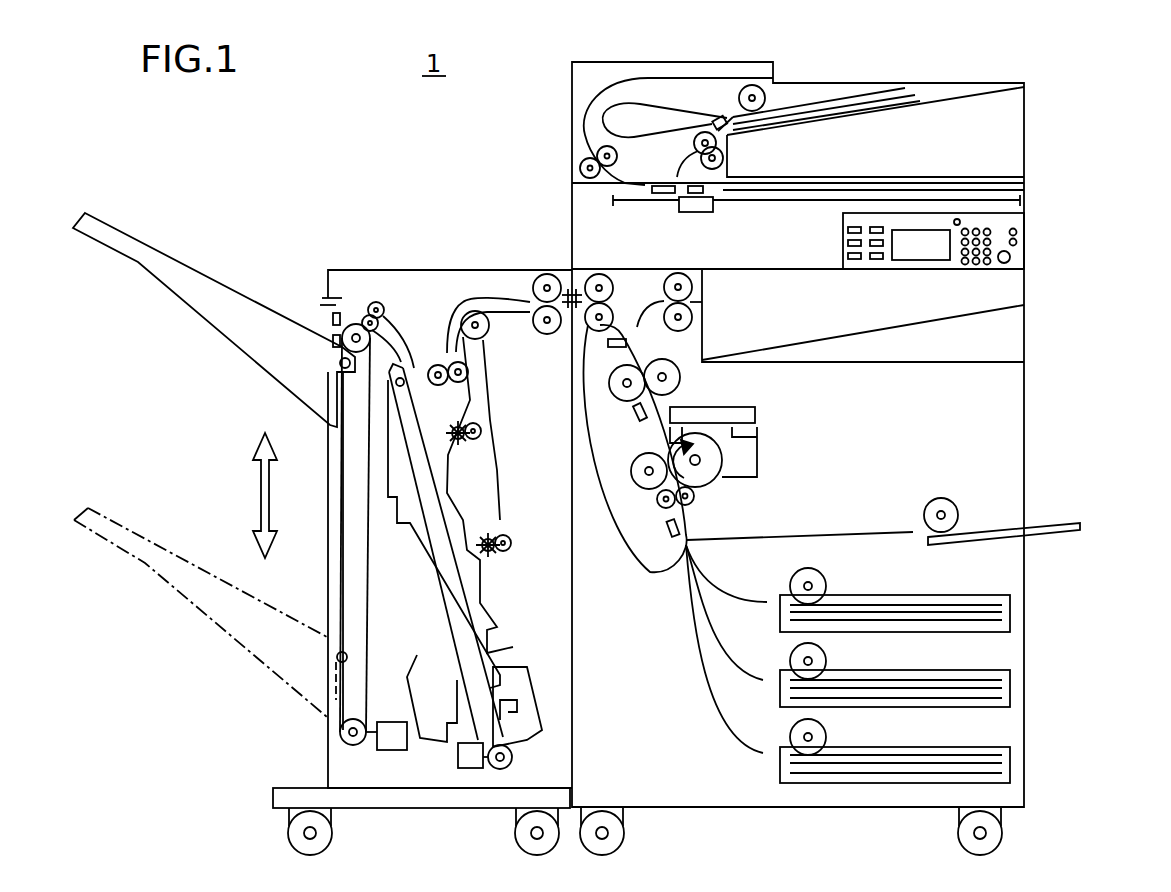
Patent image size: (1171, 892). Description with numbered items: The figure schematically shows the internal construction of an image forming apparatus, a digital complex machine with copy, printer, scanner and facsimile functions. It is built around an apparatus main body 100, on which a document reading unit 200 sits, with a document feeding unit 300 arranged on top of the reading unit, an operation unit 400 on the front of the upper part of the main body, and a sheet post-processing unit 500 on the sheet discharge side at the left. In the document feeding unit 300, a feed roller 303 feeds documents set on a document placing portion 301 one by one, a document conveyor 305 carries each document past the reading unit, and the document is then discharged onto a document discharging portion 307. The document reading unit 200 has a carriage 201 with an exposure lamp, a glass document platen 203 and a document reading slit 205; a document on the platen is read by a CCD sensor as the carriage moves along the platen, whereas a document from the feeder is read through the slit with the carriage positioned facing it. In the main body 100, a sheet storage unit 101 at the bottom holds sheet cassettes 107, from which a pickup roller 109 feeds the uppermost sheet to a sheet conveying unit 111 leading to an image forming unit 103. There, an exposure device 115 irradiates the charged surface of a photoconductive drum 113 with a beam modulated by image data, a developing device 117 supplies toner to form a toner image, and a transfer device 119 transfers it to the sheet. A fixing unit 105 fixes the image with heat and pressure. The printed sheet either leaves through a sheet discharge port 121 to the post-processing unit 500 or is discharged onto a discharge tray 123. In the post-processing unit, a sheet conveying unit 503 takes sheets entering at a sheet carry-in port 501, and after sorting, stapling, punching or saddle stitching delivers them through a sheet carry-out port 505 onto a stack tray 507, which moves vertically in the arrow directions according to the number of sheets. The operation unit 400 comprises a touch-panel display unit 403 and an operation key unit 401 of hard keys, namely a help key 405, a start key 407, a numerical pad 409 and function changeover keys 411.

The apparatus main body 100 is at (1000, 418).
The sheet storage unit 101 is at (1032, 591).
The image forming unit 103 is at (696, 395).
The fixing unit 105 is at (626, 393).
The sheet cassette 107 is at (1008, 612).
The pickup roller 109 is at (826, 586).
The sheet conveying unit 111 is at (683, 514).
The photoconductive drum 113 is at (703, 479).
The exposure device 115 is at (757, 413).
The developing device 117 is at (757, 448).
The transfer device 119 is at (647, 482).
The sheet discharge port 121 is at (582, 296).
The discharge tray 123 is at (885, 325).
The document reading unit 200 is at (634, 210).
The carriage 201 is at (704, 212).
The document platen 203 is at (1000, 193).
The document reading slit 205 is at (643, 184).
The document feeding unit 300 is at (846, 86).
The document placing portion 301 is at (948, 92).
The feed roller 303 is at (766, 95).
The document conveyor 305 is at (635, 130).
The document discharging portion 307 is at (832, 176).
The operation unit 400 is at (1030, 244).
The operation key unit 401 is at (1026, 260).
The display unit 403 is at (922, 243).
The help key 405 is at (960, 221).
The start key 407 is at (1003, 264).
The numerical pad 409 is at (968, 262).
The function changeover keys 411 is at (845, 240).
The sheet post-processing unit 500 is at (398, 266).
The sheet carry-in port 501 is at (547, 274).
The sheet conveying unit 503 is at (480, 295).
The sheet carry-out port 505 is at (318, 298).
The stack tray 507 is at (255, 363).